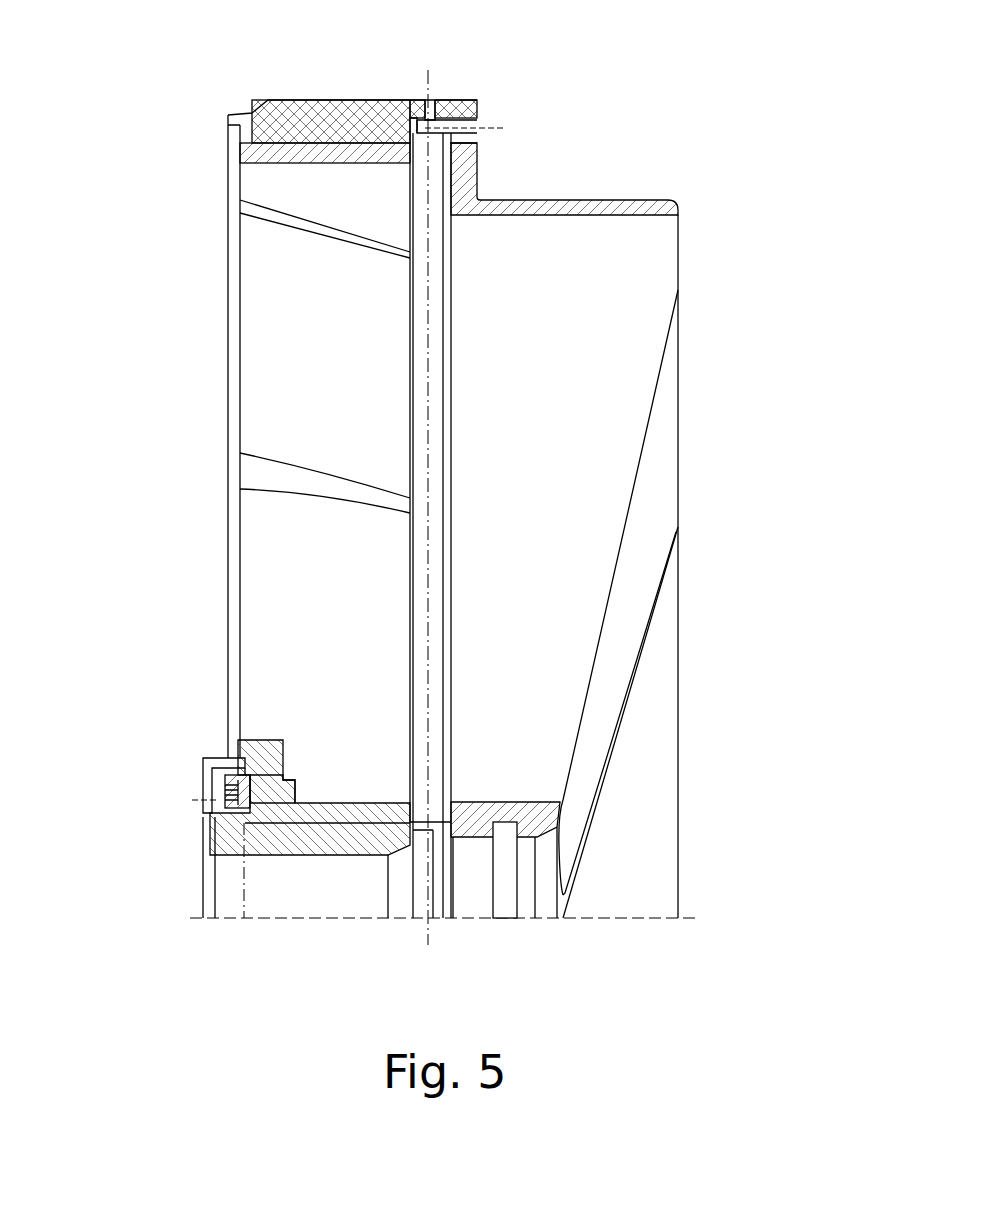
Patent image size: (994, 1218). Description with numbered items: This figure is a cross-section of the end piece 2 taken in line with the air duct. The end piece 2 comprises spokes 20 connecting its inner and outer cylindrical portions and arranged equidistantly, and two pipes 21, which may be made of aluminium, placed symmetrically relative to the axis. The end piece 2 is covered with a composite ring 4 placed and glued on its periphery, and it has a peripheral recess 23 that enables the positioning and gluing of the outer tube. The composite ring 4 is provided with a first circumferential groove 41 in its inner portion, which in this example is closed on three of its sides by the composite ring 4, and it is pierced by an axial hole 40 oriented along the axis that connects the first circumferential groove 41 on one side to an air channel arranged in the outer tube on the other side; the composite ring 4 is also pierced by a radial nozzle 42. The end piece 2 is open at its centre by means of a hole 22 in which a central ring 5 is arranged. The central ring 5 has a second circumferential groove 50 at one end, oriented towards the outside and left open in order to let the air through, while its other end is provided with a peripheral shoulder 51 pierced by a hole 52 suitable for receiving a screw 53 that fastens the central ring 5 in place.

The end piece 2 is at (610, 207).
The composite ring 4 is at (303, 116).
The central ring 5 is at (340, 838).
The spokes 20 is at (640, 288).
The pipes 21 is at (418, 338).
The hole 22 is at (240, 893).
The peripheral recess 23 is at (553, 177).
The axial hole 40 is at (463, 125).
The first circumferential groove 41 is at (418, 126).
The radial nozzle 42 is at (430, 108).
The second circumferential groove 50 is at (430, 842).
The peripheral shoulder 51 is at (212, 760).
The hole 52 is at (218, 780).
The screw 53 is at (282, 792).